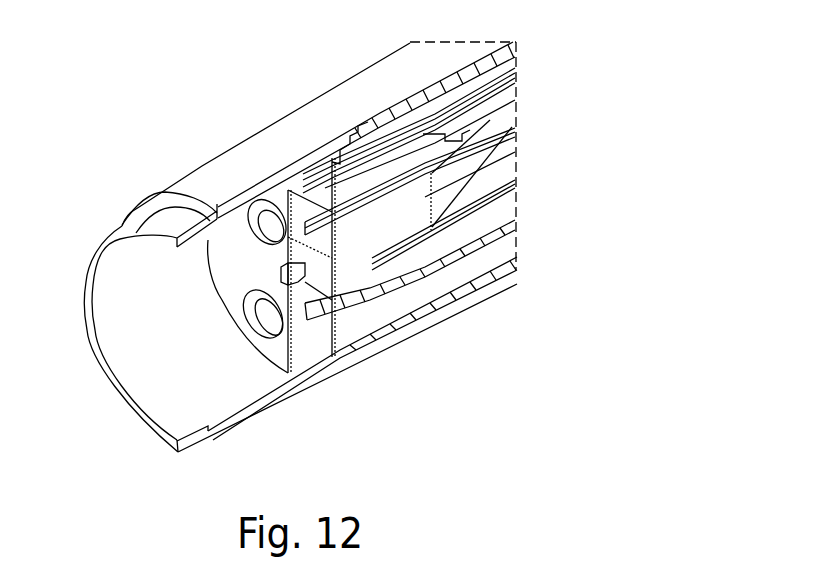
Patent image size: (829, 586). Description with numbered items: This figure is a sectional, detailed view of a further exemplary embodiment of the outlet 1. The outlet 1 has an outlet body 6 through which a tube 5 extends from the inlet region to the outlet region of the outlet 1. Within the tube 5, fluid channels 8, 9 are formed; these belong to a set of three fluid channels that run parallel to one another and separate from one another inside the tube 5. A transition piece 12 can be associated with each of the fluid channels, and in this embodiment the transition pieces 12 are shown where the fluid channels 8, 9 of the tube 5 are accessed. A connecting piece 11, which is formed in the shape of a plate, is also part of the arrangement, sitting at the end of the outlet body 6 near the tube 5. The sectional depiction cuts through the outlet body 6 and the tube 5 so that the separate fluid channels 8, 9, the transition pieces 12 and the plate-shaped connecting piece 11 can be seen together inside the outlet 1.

The outlet 1 is at (160, 129).
The tube 5 is at (503, 155).
The outlet body 6 is at (508, 284).
The fluid channel 8 is at (504, 208).
The fluid channel 9 is at (503, 103).
The connecting piece 11 is at (253, 258).
The transition piece 12 is at (428, 128).